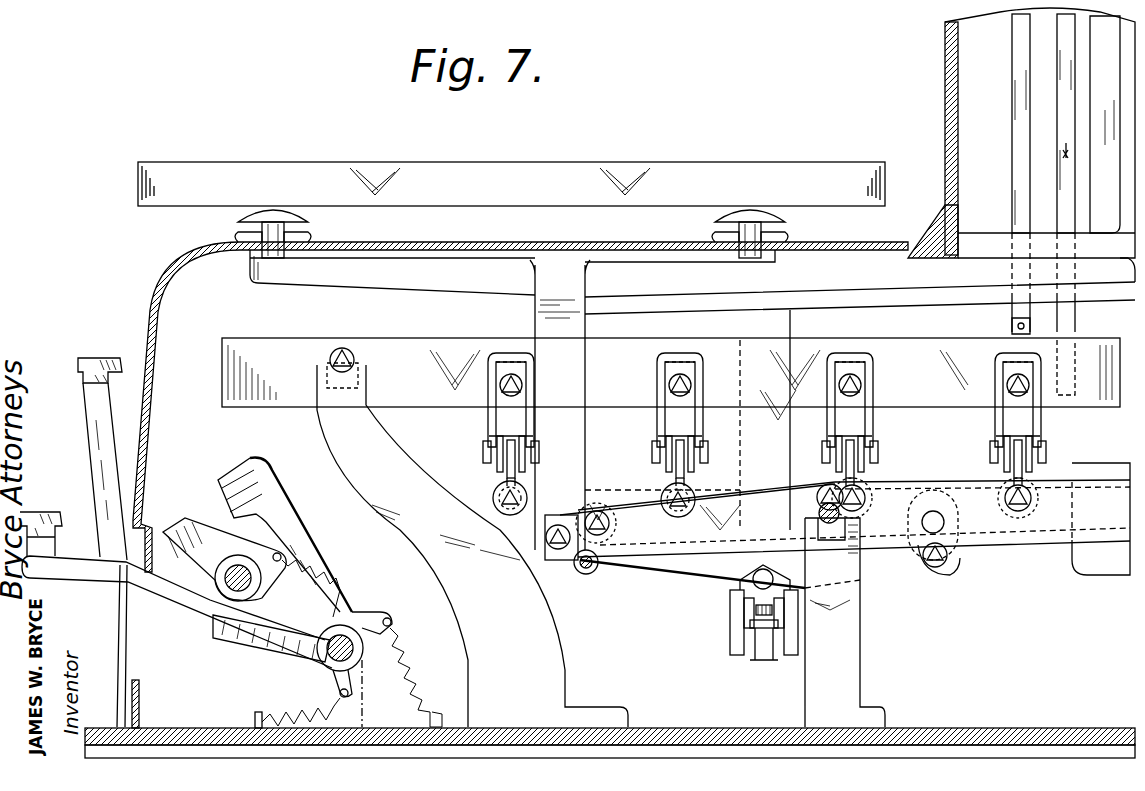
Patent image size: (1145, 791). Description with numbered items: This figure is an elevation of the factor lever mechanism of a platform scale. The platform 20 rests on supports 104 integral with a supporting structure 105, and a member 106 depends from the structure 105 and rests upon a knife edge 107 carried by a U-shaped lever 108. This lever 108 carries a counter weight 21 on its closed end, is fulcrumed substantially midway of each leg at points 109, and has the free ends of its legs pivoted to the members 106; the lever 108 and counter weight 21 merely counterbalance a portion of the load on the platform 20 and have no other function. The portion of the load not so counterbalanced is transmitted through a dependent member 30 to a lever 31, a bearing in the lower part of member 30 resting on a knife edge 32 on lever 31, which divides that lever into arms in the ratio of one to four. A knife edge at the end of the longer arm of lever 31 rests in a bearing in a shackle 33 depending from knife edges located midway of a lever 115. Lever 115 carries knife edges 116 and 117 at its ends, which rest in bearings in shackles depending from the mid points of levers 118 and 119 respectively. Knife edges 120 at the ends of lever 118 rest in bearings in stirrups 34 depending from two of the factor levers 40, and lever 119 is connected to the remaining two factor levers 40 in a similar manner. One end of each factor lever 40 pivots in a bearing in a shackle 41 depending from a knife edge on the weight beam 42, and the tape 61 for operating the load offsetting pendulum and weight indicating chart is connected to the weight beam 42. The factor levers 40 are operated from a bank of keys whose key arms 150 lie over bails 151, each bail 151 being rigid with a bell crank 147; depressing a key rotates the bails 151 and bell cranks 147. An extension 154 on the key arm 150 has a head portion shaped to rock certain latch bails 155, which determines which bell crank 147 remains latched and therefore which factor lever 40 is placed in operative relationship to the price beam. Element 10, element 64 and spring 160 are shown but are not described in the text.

The platform 20 is at (560, 175).
The supports 104 is at (288, 225).
The supporting structure 105 is at (642, 262).
The member 106 is at (560, 405).
The guide block 64 is at (1020, 118).
The tape 61 is at (1060, 172).
The weight beam 42 is at (922, 346).
The shackle 41 is at (488, 380).
The stirrups 34 is at (500, 460).
The factor levers 40 is at (497, 450).
The knife edges 120 is at (492, 493).
The dependent member 30 is at (782, 458).
The U-shaped lever 108 is at (1052, 482).
The counter weight 21 is at (1095, 576).
The fulcrum points 109 is at (866, 490).
The lever 119 is at (948, 492).
The knife edge 117 is at (950, 560).
The lever 115 is at (646, 575).
The knife edge 107 is at (548, 542).
The knife edge 116 is at (590, 572).
The lever 118 is at (586, 498).
The shackle 33 is at (745, 600).
The knife edge 32 is at (732, 645).
The lever 31 is at (760, 662).
The key 10 is at (100, 360).
The key arm 150 is at (84, 398).
The extension 154 is at (252, 482).
The bail 155 is at (206, 540).
The bail 151 is at (222, 645).
The bell crank 147 is at (286, 665).
The spring 160 is at (416, 660).